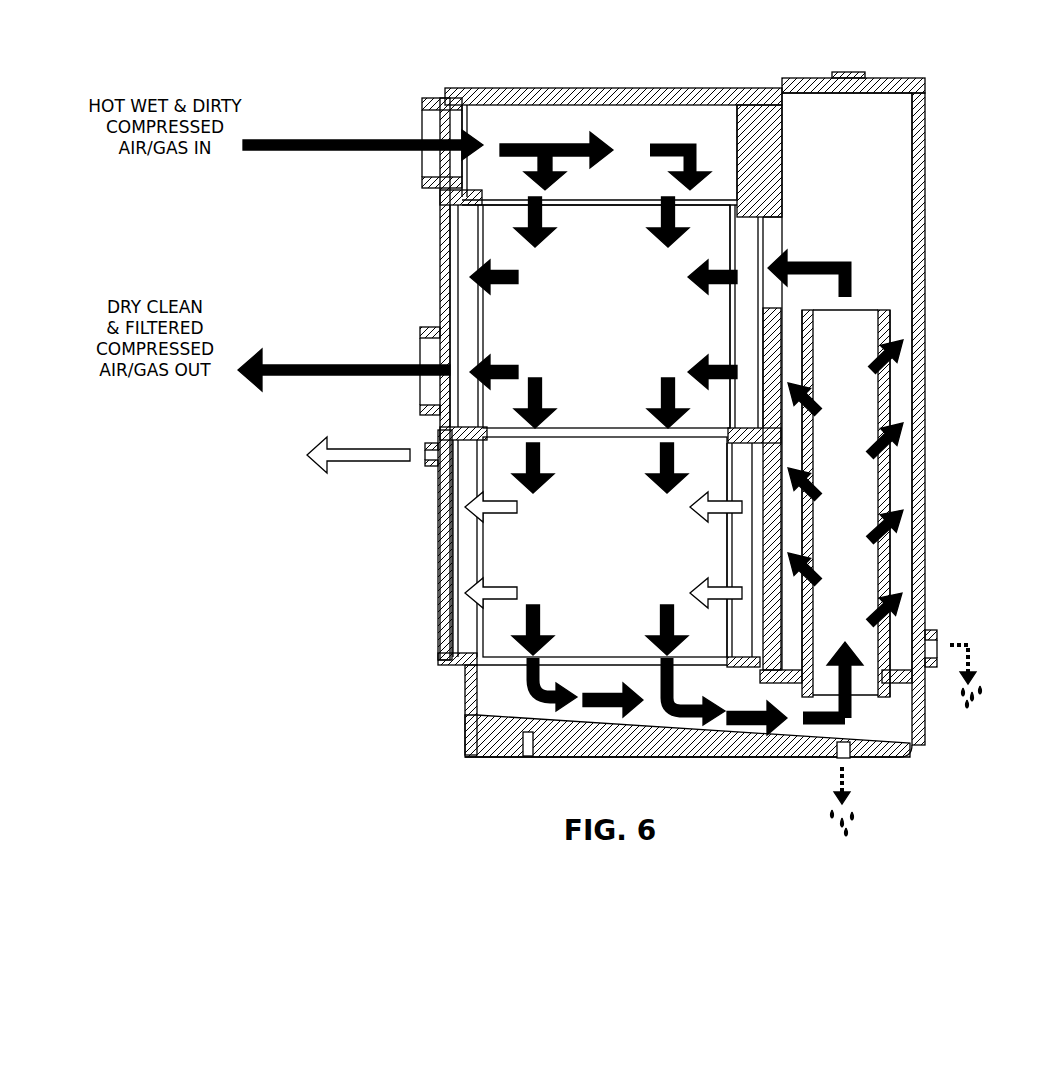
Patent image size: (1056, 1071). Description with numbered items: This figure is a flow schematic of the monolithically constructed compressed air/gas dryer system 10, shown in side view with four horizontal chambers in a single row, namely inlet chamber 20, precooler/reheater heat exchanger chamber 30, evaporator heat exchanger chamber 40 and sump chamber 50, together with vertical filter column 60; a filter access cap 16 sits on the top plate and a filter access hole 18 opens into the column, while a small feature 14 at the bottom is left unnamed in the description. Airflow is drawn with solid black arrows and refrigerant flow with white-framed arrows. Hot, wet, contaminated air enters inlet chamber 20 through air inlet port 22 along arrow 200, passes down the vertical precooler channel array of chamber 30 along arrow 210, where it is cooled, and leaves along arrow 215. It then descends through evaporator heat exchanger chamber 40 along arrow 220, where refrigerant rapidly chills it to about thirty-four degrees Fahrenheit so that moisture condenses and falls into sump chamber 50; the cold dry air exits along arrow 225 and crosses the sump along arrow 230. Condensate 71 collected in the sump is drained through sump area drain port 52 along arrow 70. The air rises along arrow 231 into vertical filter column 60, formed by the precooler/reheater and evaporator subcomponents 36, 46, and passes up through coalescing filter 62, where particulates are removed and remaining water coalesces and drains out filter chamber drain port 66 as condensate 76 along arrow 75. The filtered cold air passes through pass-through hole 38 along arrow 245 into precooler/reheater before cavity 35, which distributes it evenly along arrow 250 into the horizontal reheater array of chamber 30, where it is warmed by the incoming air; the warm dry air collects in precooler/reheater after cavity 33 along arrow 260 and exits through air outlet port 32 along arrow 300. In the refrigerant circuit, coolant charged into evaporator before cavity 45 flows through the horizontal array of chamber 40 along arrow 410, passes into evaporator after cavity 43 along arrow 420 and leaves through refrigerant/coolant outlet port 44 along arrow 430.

The compressed air/gas dryer system 10 is at (524, 66).
The drain opening 14 is at (527, 756).
The filter access cap 16 is at (880, 76).
The filter access hole 18 is at (900, 96).
The inlet chamber 20 is at (632, 88).
The air inlet port 22 is at (422, 175).
The precooler/reheater heat exchanger chamber 30 is at (609, 316).
The air outlet port 32 is at (418, 397).
The precooler/reheater after cavity 33 is at (470, 314).
The precooler/reheater before cavity 35 is at (741, 330).
The precooler/reheater subcomponent 36 is at (925, 345).
The pass-through hole 38 is at (782, 236).
The evaporator heat exchanger chamber 40 is at (617, 547).
The evaporator after cavity 43 is at (470, 565).
The refrigerant/coolant outlet port 44 is at (428, 465).
The evaporator before cavity 45 is at (791, 543).
The evaporator subcomponent 46 is at (915, 470).
The sump chamber 50 is at (925, 737).
The sump area drain port 52 is at (840, 758).
The vertical filter column 60 is at (916, 156).
The coalescing filter 62 is at (912, 308).
The filter chamber drain port 66 is at (930, 667).
The condensate removal flow arrow 70 is at (848, 780).
The condensate 71 is at (858, 816).
The filter drain flow arrow 75 is at (953, 645).
The condensate 76 is at (983, 690).
The inlet air flow arrow 200 is at (425, 133).
The precooler air flow arrow 210 is at (622, 148).
The precooled air exit arrow 215 is at (540, 380).
The evaporator air flow arrow 220 is at (527, 475).
The sump entry air flow arrow 225 is at (510, 650).
The sump air flow arrow 230 is at (525, 682).
The filter column entry arrow 231 is at (820, 745).
The pass-through air flow arrow 245 is at (855, 300).
The reheater approach flow arrow 250 is at (690, 272).
The reheater exit flow arrow 260 is at (520, 278).
The outlet air flow arrow 300 is at (385, 358).
The refrigerant flow arrow 410 is at (705, 512).
The spent refrigerant flow arrow 420 is at (510, 505).
The refrigerant exit flow arrow 430 is at (310, 468).